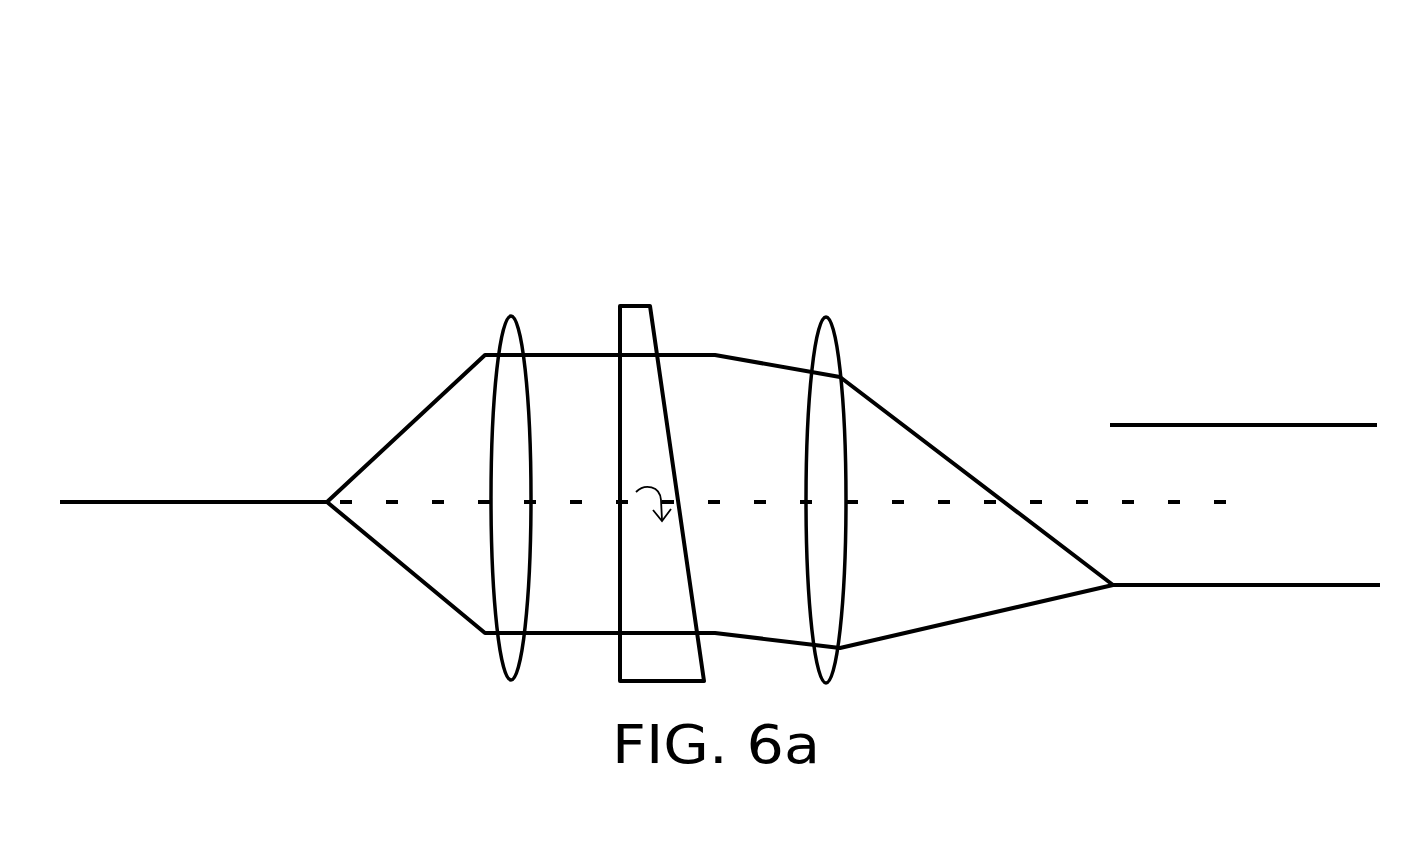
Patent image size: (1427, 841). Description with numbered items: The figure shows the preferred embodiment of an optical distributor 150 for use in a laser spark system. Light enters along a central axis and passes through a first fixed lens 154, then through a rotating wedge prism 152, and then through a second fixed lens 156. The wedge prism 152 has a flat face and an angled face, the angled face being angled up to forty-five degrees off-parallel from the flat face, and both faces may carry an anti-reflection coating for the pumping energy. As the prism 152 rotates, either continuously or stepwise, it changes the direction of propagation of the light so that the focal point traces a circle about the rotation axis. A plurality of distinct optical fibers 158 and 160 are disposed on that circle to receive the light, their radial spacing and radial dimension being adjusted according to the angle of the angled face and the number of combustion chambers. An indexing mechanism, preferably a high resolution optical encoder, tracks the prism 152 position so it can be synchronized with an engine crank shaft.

The optical distributor 150 is at (685, 128).
The rotating wedge prism 152 is at (640, 395).
The fixed lens 154 is at (510, 405).
The fixed lens 156 is at (826, 427).
The optical fiber 158 is at (1313, 425).
The optical fiber 160 is at (1287, 585).